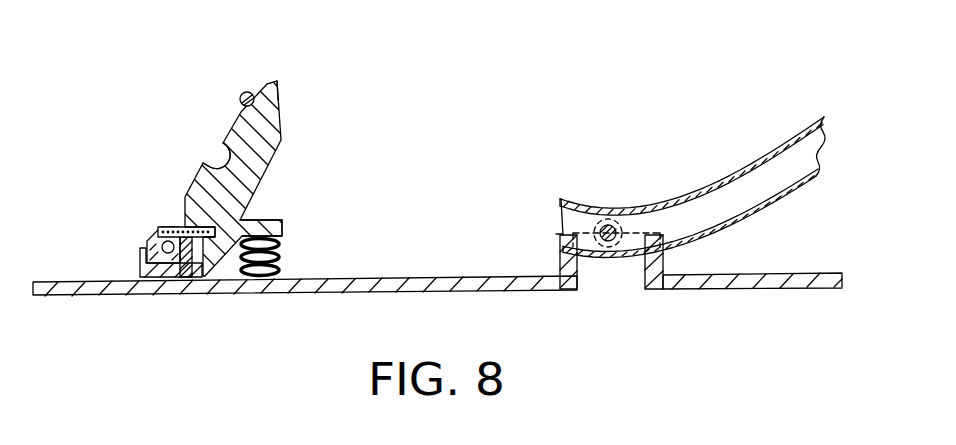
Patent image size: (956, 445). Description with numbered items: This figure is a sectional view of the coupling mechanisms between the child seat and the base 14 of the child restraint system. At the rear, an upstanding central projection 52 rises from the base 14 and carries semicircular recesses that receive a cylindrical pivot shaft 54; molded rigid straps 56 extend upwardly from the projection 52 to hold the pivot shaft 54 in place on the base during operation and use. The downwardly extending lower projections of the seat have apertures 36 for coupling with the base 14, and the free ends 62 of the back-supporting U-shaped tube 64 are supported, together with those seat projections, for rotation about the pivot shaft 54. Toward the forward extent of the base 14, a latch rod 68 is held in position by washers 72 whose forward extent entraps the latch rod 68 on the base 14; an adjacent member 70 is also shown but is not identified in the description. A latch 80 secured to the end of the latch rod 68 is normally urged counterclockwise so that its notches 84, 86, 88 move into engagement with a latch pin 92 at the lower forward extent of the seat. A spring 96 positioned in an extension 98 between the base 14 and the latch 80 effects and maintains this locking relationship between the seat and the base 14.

The base 14 is at (178, 222).
The apertures 36 is at (666, 215).
The upstanding central projection 52 is at (565, 291).
The cylindrical pivot shaft 54 is at (615, 210).
The molded rigid straps 56 is at (621, 250).
The free ends 62 is at (561, 200).
The back-supporting U-shaped tube 64 is at (787, 142).
The latch rod 68 is at (165, 295).
The bracket 70 is at (143, 262).
The washers 72 is at (167, 220).
The latch 80 is at (280, 101).
The notch 84 is at (258, 86).
The notch 86 is at (217, 148).
The notch 88 is at (178, 208).
The latch pins 92 is at (242, 94).
The springs 96 is at (282, 243).
The extensions 98 is at (283, 222).